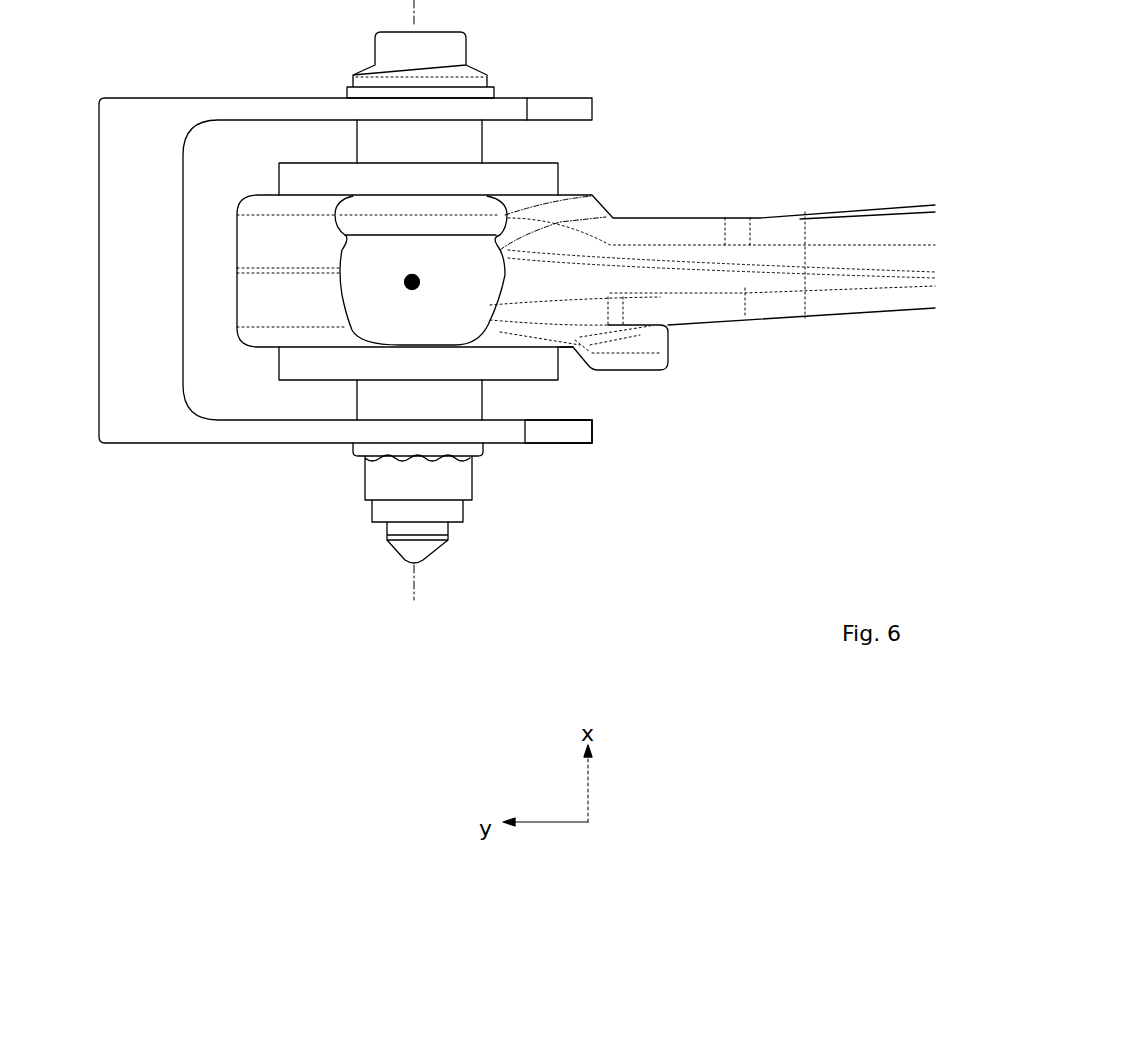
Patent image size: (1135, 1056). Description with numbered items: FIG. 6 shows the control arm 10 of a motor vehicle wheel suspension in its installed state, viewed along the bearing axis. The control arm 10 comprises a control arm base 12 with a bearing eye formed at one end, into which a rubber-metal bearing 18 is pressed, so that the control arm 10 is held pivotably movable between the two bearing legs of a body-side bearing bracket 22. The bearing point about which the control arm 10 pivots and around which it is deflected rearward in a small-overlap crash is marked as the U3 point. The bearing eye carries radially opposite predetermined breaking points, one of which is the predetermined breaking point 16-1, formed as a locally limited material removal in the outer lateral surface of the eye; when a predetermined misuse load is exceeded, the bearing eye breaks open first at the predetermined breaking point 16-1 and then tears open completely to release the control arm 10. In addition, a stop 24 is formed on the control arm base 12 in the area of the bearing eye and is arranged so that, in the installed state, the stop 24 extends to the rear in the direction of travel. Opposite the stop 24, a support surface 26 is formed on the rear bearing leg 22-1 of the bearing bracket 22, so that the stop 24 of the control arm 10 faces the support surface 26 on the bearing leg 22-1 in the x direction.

The control arm 10 is at (811, 188).
The control arm base 12 is at (820, 298).
The predetermined breaking point 16-1 is at (477, 258).
The rubber-metal bearing 18 is at (543, 190).
The bearing bracket 22 is at (158, 463).
The bearing leg 22-1 is at (507, 432).
The stop 24 is at (668, 360).
The support surface 26 is at (572, 409).
The U3 point U3 is at (404, 283).